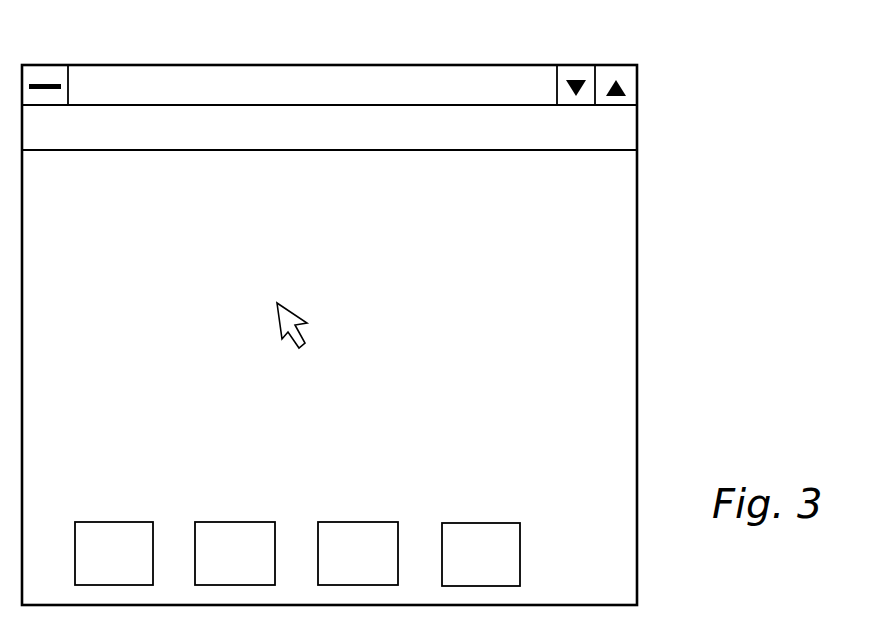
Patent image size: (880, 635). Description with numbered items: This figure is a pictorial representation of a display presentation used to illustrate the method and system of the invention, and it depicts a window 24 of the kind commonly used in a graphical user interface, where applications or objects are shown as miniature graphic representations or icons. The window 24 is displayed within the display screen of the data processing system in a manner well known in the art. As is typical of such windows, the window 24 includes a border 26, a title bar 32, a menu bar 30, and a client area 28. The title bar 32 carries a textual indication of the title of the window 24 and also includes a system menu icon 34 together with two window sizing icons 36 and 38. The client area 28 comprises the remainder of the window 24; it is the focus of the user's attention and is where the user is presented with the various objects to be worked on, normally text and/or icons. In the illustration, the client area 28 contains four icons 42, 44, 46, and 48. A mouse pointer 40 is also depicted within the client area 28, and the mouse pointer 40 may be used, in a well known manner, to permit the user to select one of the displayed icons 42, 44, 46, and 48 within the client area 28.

The window 24 is at (286, 65).
The border 26 is at (637, 328).
The client area 28 is at (500, 312).
The menu bar 30 is at (627, 130).
The title bar 32 is at (392, 80).
The system menu icon 34 is at (48, 65).
The window sizing icon 36 is at (575, 65).
The window sizing icon 38 is at (627, 65).
The mouse pointer 40 is at (295, 318).
The icon 42 is at (112, 522).
The icon 44 is at (232, 522).
The icon 46 is at (352, 522).
The icon 48 is at (482, 523).